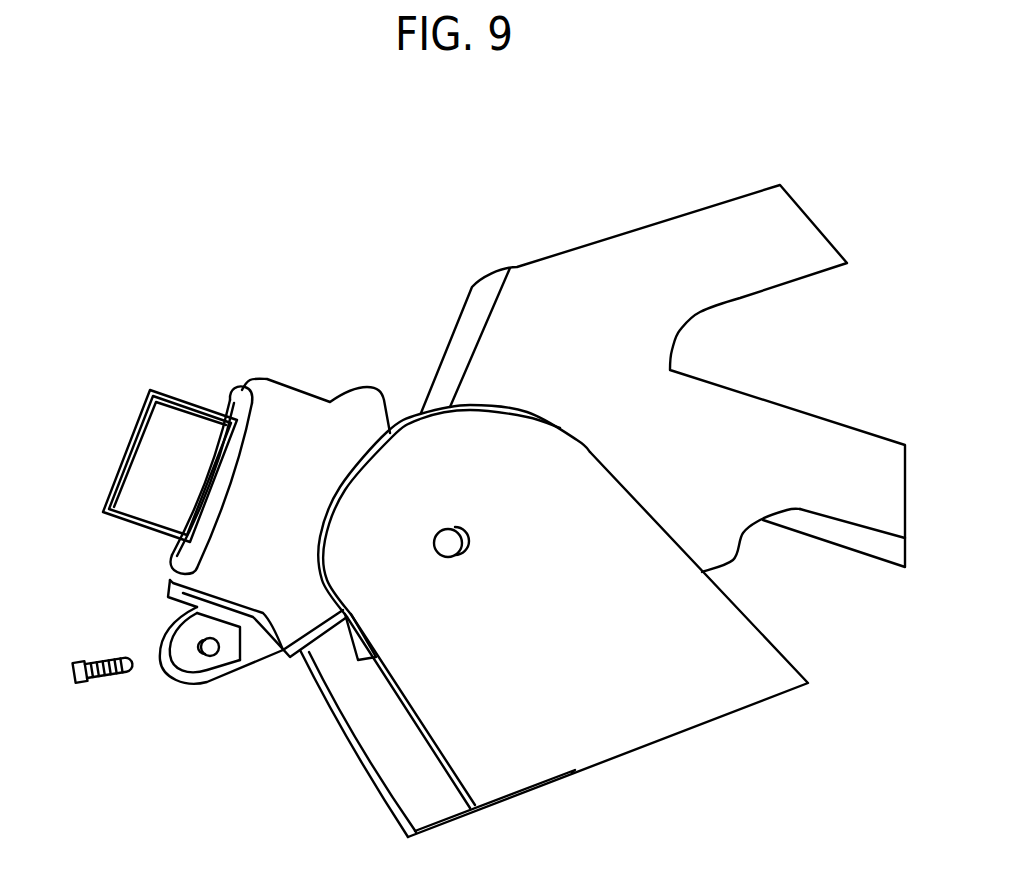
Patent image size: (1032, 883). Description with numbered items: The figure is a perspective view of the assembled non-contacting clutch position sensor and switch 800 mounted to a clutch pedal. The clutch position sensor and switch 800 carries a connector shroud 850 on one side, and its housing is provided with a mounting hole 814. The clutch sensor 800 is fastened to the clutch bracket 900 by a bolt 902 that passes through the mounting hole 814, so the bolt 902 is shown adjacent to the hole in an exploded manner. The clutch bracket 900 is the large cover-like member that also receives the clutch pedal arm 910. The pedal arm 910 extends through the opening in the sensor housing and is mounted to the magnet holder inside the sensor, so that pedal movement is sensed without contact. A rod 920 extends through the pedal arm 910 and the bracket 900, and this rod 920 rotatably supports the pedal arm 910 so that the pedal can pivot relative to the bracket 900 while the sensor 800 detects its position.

The clutch position sensor and switch 800 is at (307, 392).
The mounting hole 814 is at (222, 658).
The connector shroud 850 is at (124, 452).
The clutch bracket 900 is at (570, 770).
The bolt 902 is at (75, 680).
The clutch pedal arm 910 is at (793, 433).
The rod 920 is at (450, 540).